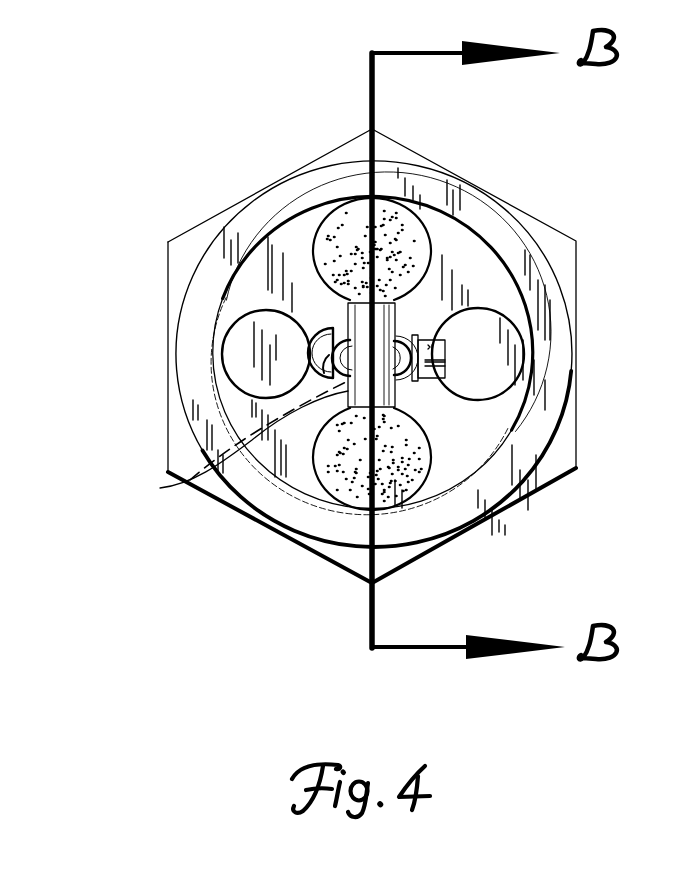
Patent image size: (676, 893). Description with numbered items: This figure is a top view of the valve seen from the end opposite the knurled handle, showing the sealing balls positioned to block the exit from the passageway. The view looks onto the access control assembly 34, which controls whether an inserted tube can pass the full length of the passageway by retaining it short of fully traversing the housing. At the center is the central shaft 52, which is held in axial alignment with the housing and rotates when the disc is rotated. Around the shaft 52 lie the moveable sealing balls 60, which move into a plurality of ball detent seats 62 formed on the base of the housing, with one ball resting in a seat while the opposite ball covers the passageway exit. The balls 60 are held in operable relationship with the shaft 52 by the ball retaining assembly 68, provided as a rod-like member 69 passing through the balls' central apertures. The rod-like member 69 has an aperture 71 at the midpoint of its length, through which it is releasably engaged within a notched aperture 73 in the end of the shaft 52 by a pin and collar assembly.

The access control assembly 34 is at (305, 240).
The central shaft 52 is at (395, 404).
The moveable sealing balls 60 is at (398, 233).
The ball detent seats 62 is at (237, 360).
The ball retaining assembly 68 is at (410, 378).
The rod-like member 69 is at (276, 403).
The aperture 71 is at (163, 486).
The notched aperture 73 is at (417, 338).